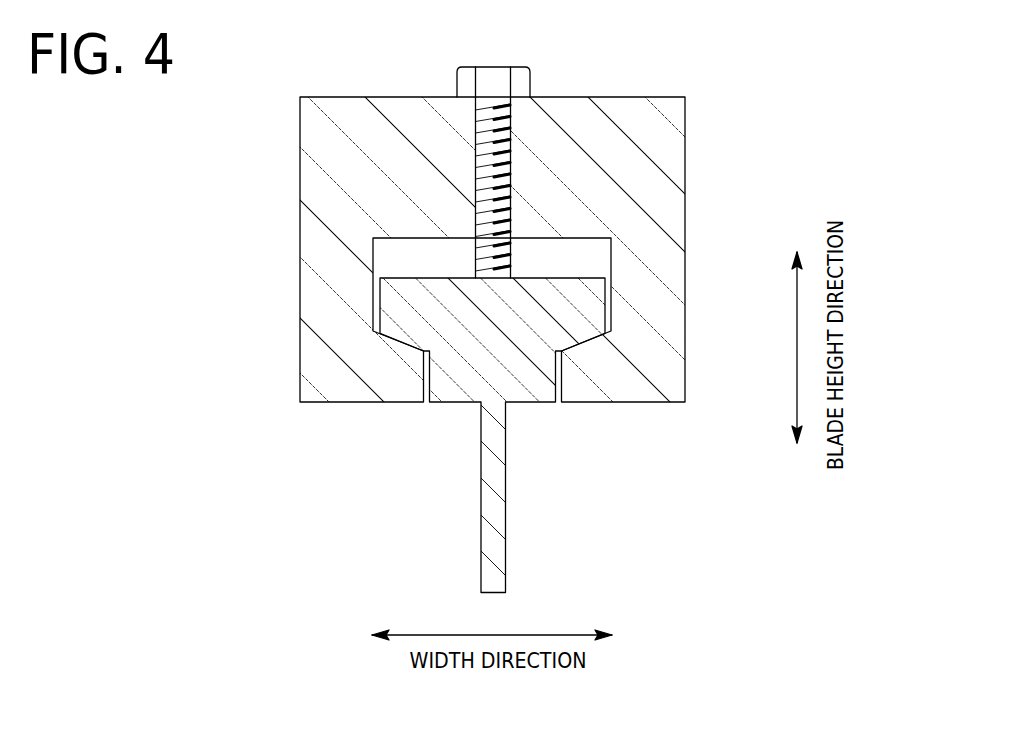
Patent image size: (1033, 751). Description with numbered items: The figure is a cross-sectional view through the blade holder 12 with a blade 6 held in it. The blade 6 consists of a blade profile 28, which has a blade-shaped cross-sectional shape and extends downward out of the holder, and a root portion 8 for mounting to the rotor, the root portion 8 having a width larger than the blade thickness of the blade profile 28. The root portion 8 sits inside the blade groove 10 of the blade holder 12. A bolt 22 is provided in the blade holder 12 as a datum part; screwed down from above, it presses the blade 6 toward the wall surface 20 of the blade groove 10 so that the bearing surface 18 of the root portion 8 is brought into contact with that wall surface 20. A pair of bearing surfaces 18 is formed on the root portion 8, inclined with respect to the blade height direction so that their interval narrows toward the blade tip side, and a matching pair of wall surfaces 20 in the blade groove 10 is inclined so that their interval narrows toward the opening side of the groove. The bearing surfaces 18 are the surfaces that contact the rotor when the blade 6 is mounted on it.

The blade 6 is at (506, 527).
The root portion 8 is at (605, 300).
The blade groove 10 is at (415, 238).
The blade holder 12 is at (686, 152).
The bearing surface 18 is at (412, 343).
The wall surface 20 is at (408, 350).
The bolt 22 is at (493, 67).
The blade profile 28 is at (481, 510).